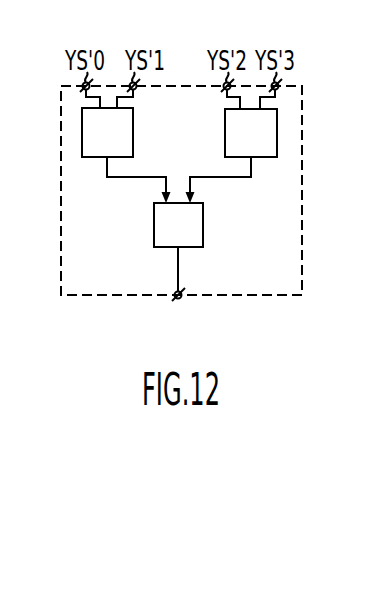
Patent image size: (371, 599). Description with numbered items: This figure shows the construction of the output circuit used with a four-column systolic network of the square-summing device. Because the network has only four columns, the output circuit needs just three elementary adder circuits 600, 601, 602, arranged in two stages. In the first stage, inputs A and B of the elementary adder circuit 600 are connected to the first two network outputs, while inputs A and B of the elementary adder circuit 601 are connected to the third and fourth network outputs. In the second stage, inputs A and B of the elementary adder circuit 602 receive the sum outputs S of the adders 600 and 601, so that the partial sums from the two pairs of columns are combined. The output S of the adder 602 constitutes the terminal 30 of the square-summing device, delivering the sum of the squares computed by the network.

The elementary adder circuit 600 is at (133, 147).
The elementary adder circuit 601 is at (269, 148).
The elementary adder circuit 602 is at (203, 227).
The terminal 30 is at (177, 299).